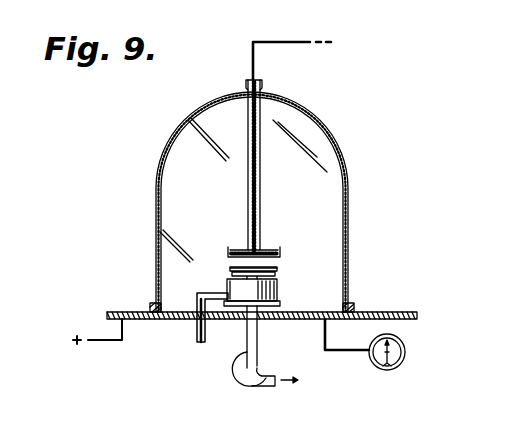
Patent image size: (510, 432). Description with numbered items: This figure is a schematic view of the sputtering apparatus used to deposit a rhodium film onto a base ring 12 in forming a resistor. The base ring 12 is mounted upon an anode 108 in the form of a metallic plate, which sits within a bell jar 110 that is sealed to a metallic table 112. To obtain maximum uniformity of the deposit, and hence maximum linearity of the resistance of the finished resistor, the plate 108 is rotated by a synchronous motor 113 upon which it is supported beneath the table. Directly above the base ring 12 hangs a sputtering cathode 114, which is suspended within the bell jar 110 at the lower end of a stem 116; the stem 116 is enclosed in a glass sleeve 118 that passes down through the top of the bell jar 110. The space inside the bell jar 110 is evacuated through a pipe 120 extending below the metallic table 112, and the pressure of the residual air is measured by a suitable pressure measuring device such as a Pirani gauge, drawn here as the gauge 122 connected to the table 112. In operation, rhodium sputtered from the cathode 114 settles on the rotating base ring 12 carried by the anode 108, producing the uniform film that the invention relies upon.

The base ring 12 is at (230, 270).
The anode 108 is at (278, 273).
The bell jar 110 is at (351, 191).
The metallic table 112 is at (401, 306).
The synchronous motor 113 is at (278, 293).
The sputtering cathode 114 is at (280, 252).
The stem 116 is at (248, 197).
The glass sleeve 118 is at (262, 199).
The pipe 120 is at (246, 348).
The gauge 122 is at (406, 352).